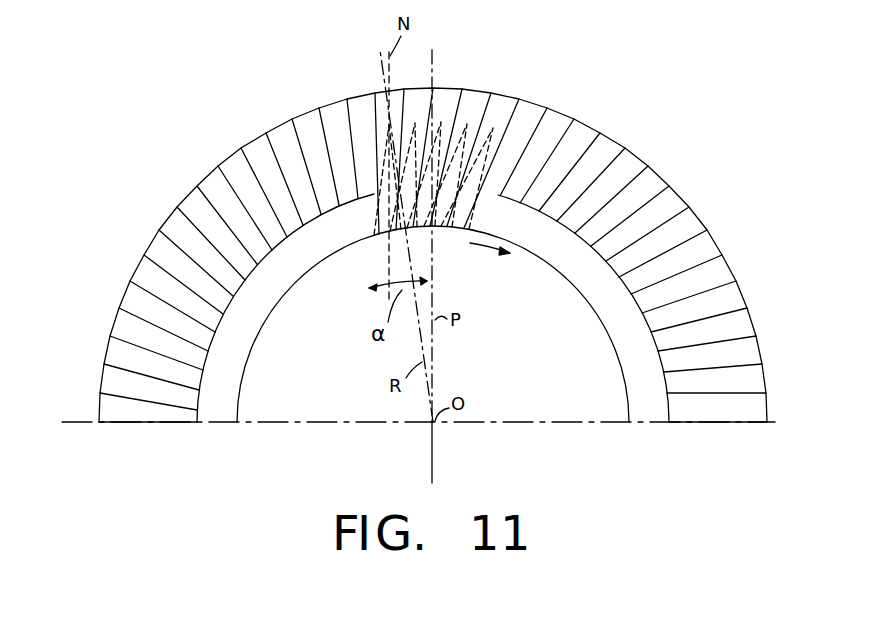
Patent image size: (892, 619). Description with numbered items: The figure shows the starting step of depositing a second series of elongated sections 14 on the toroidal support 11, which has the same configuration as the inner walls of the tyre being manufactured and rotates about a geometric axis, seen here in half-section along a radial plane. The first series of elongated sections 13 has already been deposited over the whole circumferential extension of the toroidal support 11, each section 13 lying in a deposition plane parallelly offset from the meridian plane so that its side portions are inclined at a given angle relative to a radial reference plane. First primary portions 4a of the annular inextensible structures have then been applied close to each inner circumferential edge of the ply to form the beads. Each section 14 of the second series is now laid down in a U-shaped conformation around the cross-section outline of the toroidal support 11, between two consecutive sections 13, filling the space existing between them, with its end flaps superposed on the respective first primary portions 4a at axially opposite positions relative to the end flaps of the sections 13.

The toroidal support 11 is at (715, 270).
The elongated section of the first series 13 is at (188, 207).
The elongated section of the second series 14 is at (380, 103).
The first primary portion of the annular inextensible structure 4a is at (565, 263).